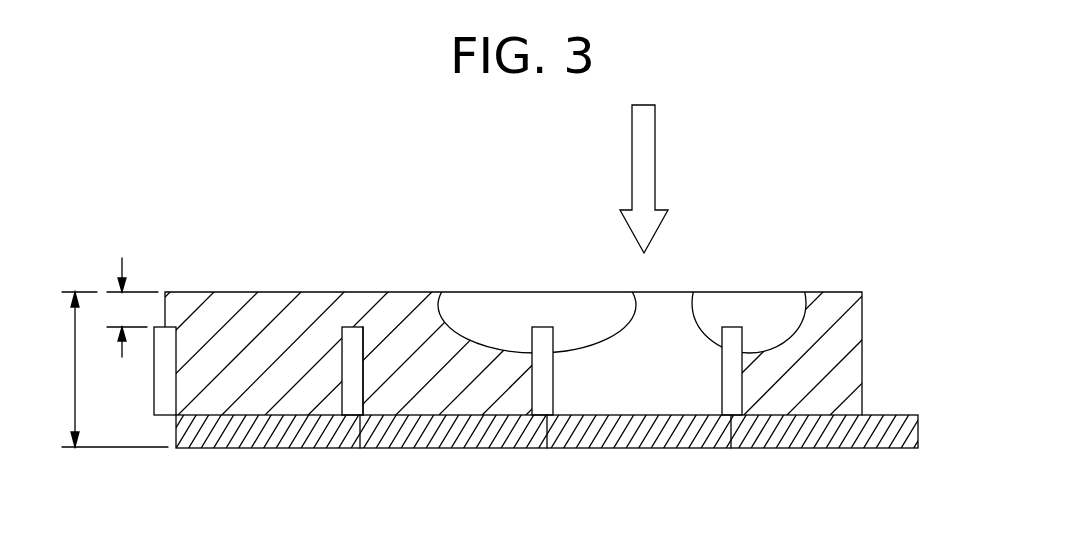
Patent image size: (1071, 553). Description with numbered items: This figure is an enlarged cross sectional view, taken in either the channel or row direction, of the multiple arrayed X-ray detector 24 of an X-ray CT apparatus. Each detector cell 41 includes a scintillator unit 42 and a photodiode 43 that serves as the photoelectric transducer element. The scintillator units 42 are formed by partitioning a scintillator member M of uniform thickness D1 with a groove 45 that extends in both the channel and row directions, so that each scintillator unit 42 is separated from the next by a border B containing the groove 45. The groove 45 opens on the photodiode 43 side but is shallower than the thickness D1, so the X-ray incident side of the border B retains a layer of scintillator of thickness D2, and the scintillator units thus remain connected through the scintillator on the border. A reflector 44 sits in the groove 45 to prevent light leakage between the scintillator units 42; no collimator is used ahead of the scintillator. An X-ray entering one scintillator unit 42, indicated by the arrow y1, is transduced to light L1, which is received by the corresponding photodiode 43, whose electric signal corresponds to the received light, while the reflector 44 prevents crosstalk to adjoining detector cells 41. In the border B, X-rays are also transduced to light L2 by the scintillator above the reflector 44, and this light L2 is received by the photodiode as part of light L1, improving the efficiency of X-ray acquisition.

The multiple arrayed X-ray detector 24 is at (790, 162).
The detector cell 41 is at (542, 473).
The scintillator unit 42 is at (277, 307).
The photodiode 43 is at (252, 433).
The reflector 44 is at (353, 393).
The groove 45 is at (363, 377).
The border B is at (522, 355).
The scintillator member M is at (832, 312).
The light L1 is at (672, 392).
The light L2 is at (747, 305).
The arrow y1 is at (640, 157).
The thickness D1 is at (115, 369).
The thickness D2 is at (127, 307).